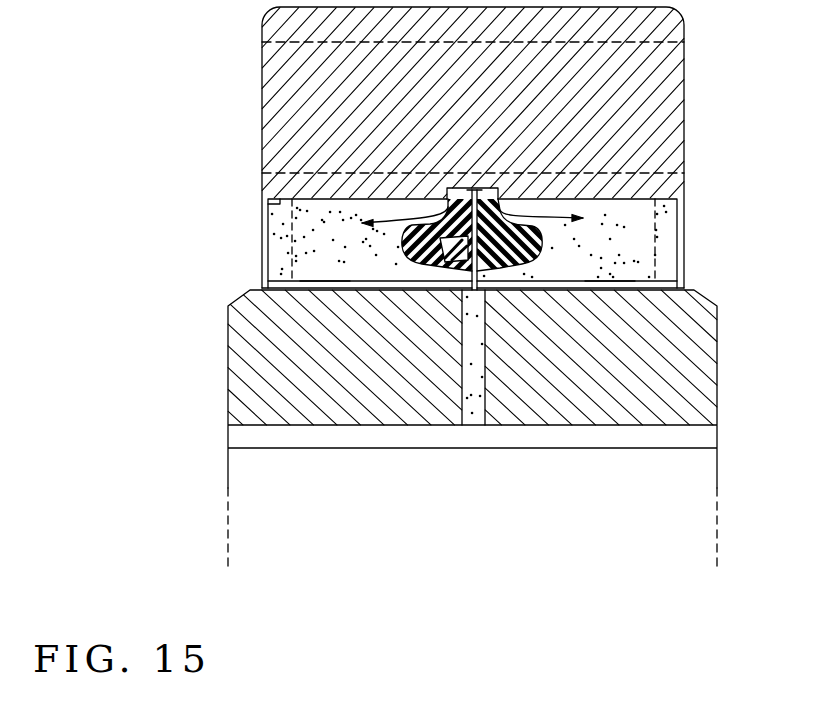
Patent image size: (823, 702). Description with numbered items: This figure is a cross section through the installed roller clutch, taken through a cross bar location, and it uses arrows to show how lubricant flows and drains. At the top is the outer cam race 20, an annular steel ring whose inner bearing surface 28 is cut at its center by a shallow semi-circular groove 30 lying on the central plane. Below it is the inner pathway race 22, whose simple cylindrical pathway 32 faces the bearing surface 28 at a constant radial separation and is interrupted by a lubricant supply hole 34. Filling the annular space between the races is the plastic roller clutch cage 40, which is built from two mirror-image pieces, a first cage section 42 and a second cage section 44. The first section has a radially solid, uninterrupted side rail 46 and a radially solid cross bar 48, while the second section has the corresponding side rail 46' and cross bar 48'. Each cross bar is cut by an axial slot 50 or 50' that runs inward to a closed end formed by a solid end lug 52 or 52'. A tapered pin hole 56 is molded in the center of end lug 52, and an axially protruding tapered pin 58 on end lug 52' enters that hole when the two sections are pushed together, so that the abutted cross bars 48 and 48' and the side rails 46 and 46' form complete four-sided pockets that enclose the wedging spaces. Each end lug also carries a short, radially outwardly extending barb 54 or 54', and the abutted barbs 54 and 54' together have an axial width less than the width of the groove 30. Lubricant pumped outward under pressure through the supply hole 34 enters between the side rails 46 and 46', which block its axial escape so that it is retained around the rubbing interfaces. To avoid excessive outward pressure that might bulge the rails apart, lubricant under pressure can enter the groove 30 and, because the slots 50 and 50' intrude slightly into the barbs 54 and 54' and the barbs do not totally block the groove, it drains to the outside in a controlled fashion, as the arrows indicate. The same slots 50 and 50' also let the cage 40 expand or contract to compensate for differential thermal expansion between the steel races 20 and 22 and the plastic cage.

The outer cam race 20 is at (262, 117).
The inner pathway race 22 is at (230, 387).
The bearing surface 28 is at (277, 203).
The groove 30 is at (462, 190).
The pathway 32 is at (282, 282).
The lubricant supply hole 34 is at (468, 405).
The roller clutch cage 40 is at (272, 242).
The first cage section 42 is at (327, 290).
The second cage section 44 is at (607, 285).
The side rail 46 is at (219, 240).
The second cage section side rail 46' is at (713, 240).
The cross bar 48 is at (368, 351).
The cross bar 48' is at (543, 372).
The slot 50 is at (298, 351).
The slot 50' is at (636, 349).
The end lug 52 is at (405, 359).
The end lug 52' is at (536, 351).
The barb 54 is at (466, 193).
The barb 54' is at (502, 198).
The tapered pin hole 56 is at (407, 241).
The tapered pin 58 is at (460, 260).